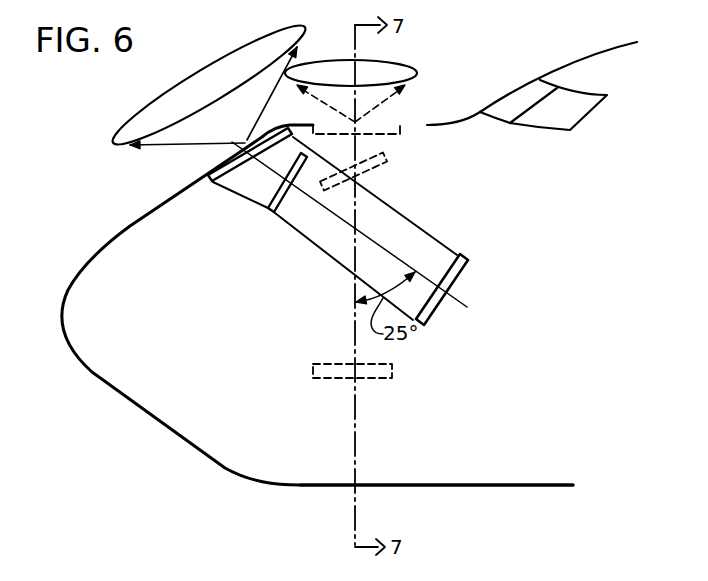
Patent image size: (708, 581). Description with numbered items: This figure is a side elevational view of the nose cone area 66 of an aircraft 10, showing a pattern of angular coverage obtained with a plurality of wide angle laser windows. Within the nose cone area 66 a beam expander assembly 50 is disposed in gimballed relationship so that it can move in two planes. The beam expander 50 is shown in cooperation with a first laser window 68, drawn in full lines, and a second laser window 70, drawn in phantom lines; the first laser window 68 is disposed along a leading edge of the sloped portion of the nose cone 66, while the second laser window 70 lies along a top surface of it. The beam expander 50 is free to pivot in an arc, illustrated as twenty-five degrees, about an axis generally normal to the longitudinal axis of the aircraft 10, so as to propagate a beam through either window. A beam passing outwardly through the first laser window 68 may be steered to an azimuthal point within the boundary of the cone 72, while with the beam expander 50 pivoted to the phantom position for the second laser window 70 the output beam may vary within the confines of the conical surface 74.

The aircraft 10 is at (313, 441).
The beam expander assembly 50 is at (465, 292).
The nose cone area 66 is at (162, 423).
The first laser window 68 is at (245, 140).
The second laser window 70 is at (400, 111).
The cone 72 is at (236, 27).
The conical surface 74 is at (418, 68).